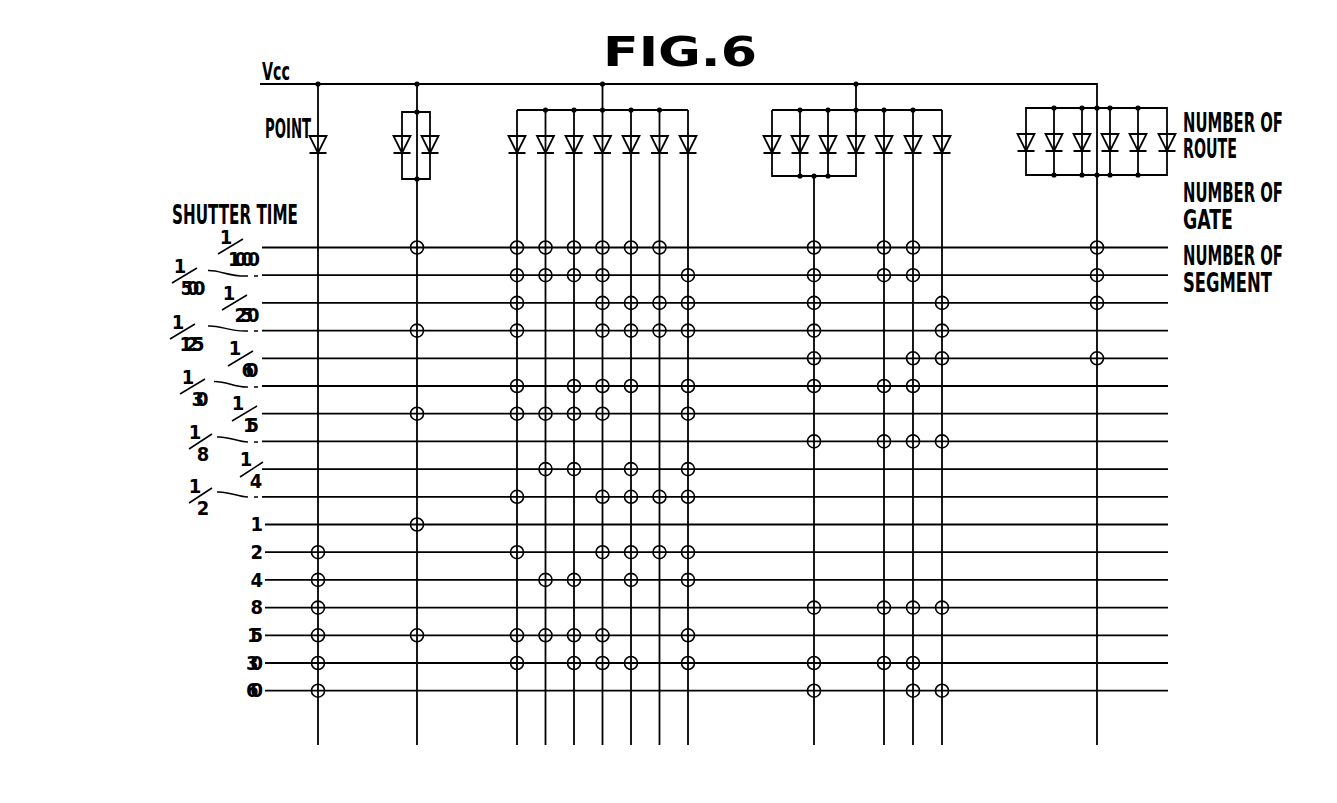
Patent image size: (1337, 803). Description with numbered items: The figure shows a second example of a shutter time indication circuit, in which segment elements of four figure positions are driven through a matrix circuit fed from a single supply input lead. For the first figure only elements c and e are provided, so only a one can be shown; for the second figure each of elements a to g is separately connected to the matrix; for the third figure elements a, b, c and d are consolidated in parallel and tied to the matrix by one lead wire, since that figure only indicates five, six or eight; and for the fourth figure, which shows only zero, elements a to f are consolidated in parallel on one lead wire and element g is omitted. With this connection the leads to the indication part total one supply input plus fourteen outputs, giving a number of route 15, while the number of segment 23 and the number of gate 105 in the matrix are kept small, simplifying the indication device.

The total number of leads 15 is at (805, 414).
The number of gates 105 is at (800, 450).
The number of segment elements 23 is at (804, 204).